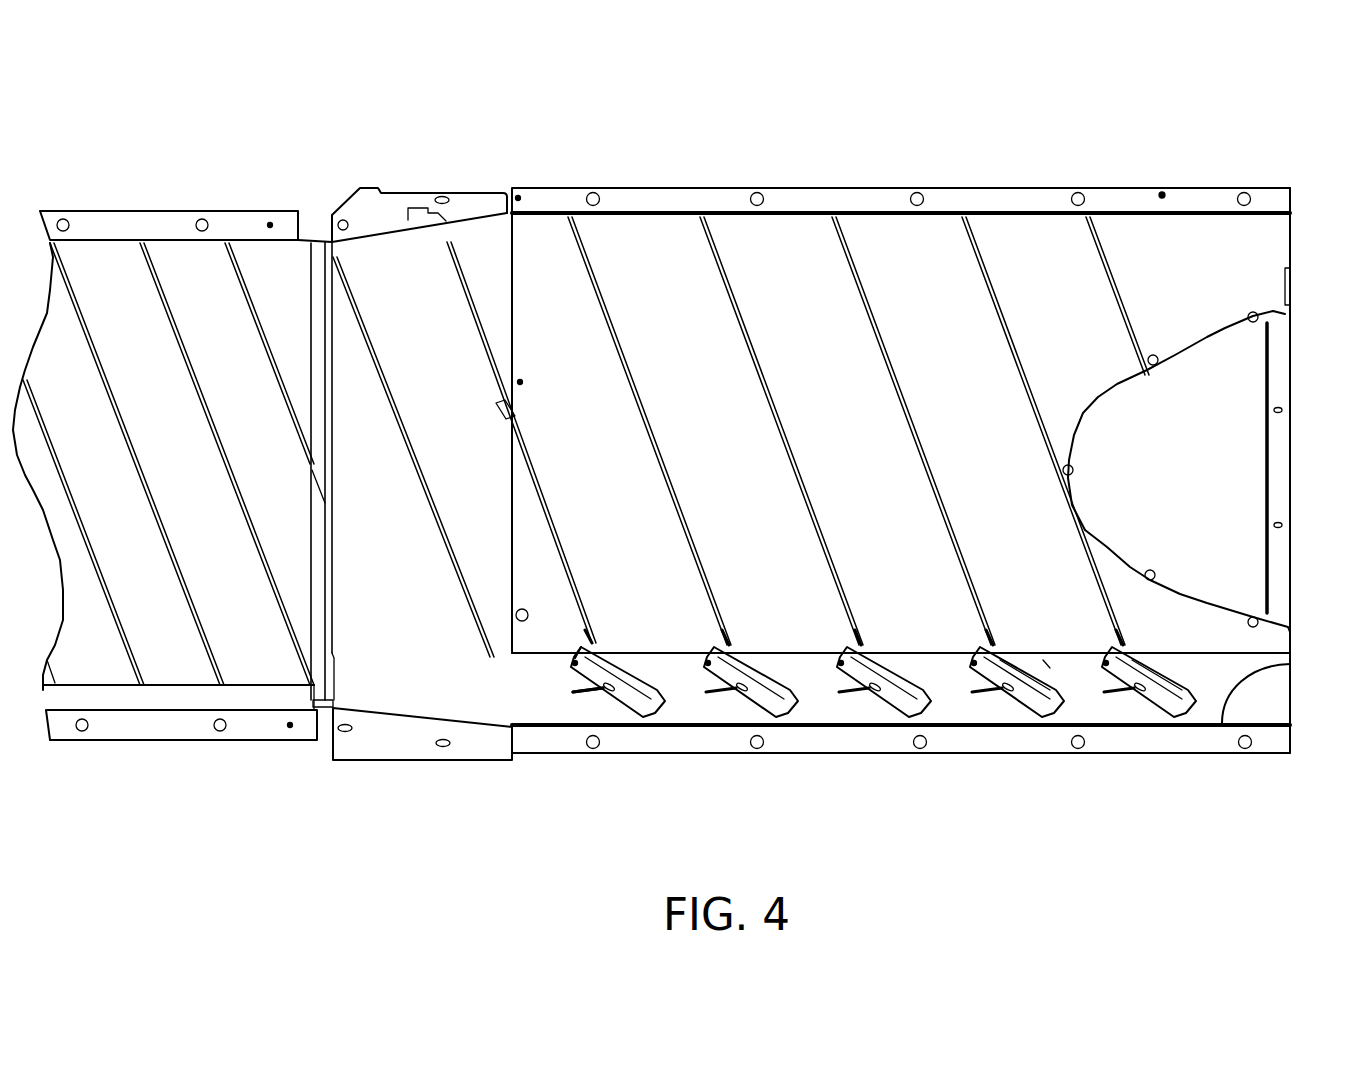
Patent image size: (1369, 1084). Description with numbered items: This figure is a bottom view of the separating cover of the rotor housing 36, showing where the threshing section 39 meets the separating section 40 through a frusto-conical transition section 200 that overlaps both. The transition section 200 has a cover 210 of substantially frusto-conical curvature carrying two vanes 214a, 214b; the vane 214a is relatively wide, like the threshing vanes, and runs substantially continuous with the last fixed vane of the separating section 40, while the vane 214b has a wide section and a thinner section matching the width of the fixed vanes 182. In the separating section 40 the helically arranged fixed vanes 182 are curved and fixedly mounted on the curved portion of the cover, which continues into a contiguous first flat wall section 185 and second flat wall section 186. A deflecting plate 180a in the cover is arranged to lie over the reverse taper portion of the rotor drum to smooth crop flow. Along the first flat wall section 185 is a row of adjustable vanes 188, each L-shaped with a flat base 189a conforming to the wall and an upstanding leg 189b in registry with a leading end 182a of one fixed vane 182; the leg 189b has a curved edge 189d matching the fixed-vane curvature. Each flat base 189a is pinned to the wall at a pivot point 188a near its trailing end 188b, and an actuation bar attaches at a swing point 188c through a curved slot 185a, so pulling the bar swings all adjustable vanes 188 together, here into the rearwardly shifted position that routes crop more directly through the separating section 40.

The threshing section 39 is at (143, 208).
The frusto-conical transition section 200 is at (388, 186).
The cover 210 is at (422, 253).
The vane 214a is at (462, 290).
The vane 214b is at (430, 497).
The rotor housing 36 is at (697, 171).
The separating section 40 is at (988, 183).
The fixed vanes 182 is at (872, 322).
The leading end 182a is at (990, 638).
The deflecting plate 180a is at (1237, 477).
The adjustable vanes 188 is at (643, 663).
The pivot points 188a is at (570, 662).
The trailing ends 188b is at (562, 656).
The swing point 188c is at (1016, 690).
The flat base 189a is at (628, 717).
The upstanding leg 189b is at (615, 652).
The curved edge 189d is at (1043, 660).
The curved slot 185a is at (578, 692).
The second flat wall section 186 is at (1272, 662).
The first flat wall section 185 is at (1267, 695).